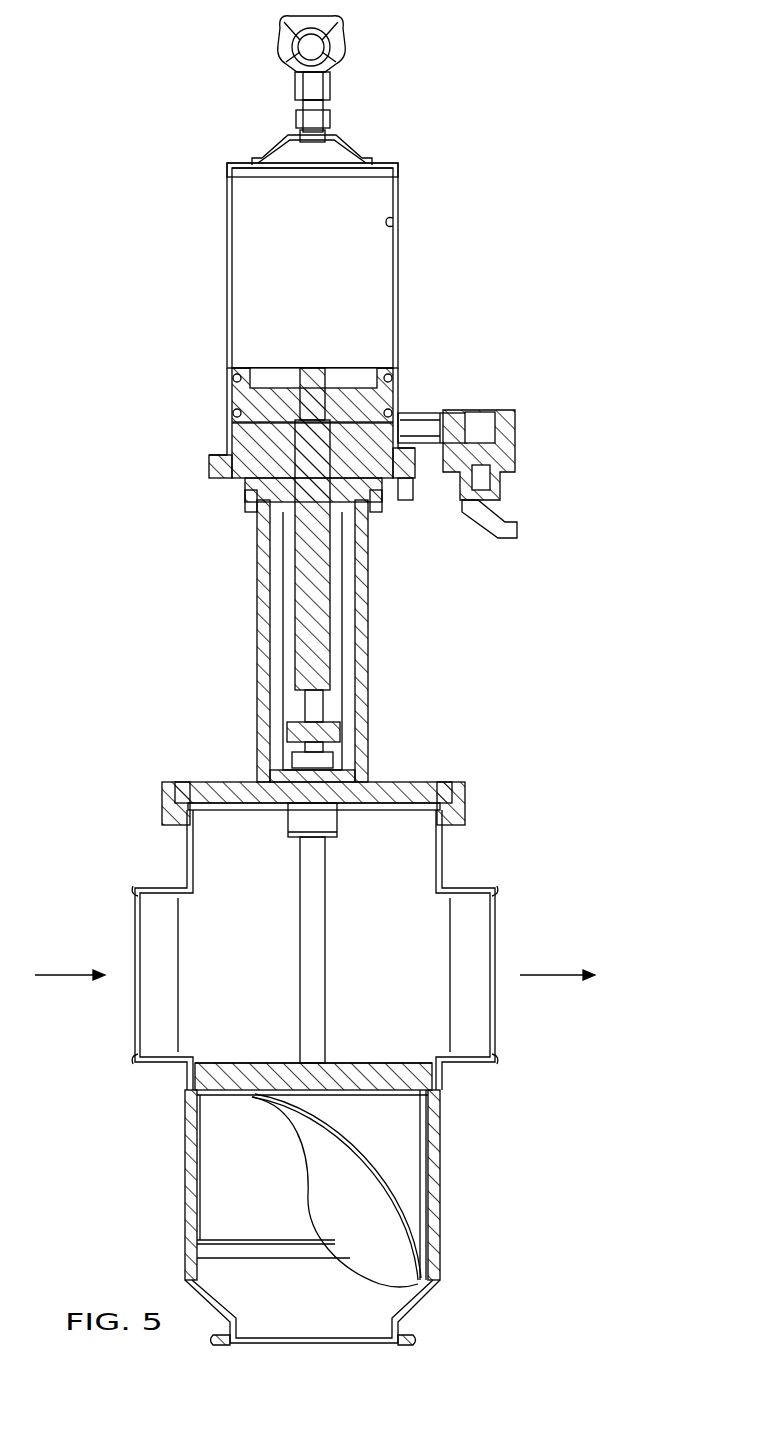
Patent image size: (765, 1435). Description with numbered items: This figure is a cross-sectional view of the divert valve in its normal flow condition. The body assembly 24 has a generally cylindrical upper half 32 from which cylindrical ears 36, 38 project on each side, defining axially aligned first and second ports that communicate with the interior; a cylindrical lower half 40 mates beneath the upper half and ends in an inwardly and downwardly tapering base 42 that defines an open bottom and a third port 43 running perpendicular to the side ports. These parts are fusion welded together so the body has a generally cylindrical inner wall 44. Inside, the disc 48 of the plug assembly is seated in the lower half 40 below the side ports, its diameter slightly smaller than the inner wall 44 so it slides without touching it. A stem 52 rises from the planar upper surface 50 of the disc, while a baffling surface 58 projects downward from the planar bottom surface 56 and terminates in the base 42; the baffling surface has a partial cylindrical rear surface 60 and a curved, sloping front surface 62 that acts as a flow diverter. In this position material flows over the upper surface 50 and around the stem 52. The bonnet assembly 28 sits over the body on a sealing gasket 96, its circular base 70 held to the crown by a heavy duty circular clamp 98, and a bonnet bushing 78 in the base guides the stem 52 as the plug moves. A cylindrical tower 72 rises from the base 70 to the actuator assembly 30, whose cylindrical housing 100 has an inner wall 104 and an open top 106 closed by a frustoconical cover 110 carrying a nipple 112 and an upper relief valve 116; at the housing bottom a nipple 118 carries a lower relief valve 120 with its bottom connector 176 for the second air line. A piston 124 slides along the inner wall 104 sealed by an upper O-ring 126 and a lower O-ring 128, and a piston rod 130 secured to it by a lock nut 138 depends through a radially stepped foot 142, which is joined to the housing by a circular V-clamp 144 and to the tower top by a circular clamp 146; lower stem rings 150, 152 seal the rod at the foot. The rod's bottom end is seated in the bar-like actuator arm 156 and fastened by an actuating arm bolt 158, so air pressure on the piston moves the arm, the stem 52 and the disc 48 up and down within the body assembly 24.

The upper relief valve 116 is at (333, 58).
The nipple 112 is at (328, 120).
The frustoconical cover 110 is at (343, 150).
The open top 106 is at (390, 173).
The inner wall 104 is at (392, 222).
The cylindrical housing 100 is at (398, 315).
The actuator assembly 30 is at (432, 276).
The piston 124 is at (395, 400).
The lock nut 138 is at (325, 377).
The lower stem ring 150 is at (390, 372).
The upper O-ring 126 is at (232, 370).
The lower O-ring 128 is at (230, 413).
The radially stepped foot 142 is at (215, 480).
The circular V-clamp 144 is at (212, 456).
The lower stem ring 152 is at (257, 503).
The circular clamp 146 is at (403, 493).
The nipple 118 is at (412, 410).
The lower relief valve 120 is at (515, 460).
The bottom connector 176 is at (510, 543).
The piston rod 130 is at (320, 563).
The tower 72 is at (368, 600).
The bonnet assembly 28 is at (412, 661).
The actuating arm bolt 158 is at (327, 727).
The actuator arm 156 is at (288, 730).
The circular base 70 is at (405, 780).
The sealing gasket 96 is at (460, 787).
The circular clamp 98 is at (465, 800).
The upper half 32 is at (187, 870).
The ear 36 is at (135, 888).
The ear 38 is at (497, 888).
The body assembly 24 is at (517, 842).
The bonnet bushing 78 is at (327, 823).
The stem 52 is at (318, 938).
The disc 48 is at (367, 1068).
The planar upper surface 50 is at (252, 1070).
The lower half 40 is at (185, 1205).
The inner wall 44 is at (200, 1143).
The planar bottom surface 56 is at (393, 1092).
The rear surface 60 is at (420, 1152).
The front surface 62 is at (340, 1143).
The baffling surface 58 is at (300, 1205).
The base 42 is at (423, 1293).
The third port 43 is at (408, 1343).